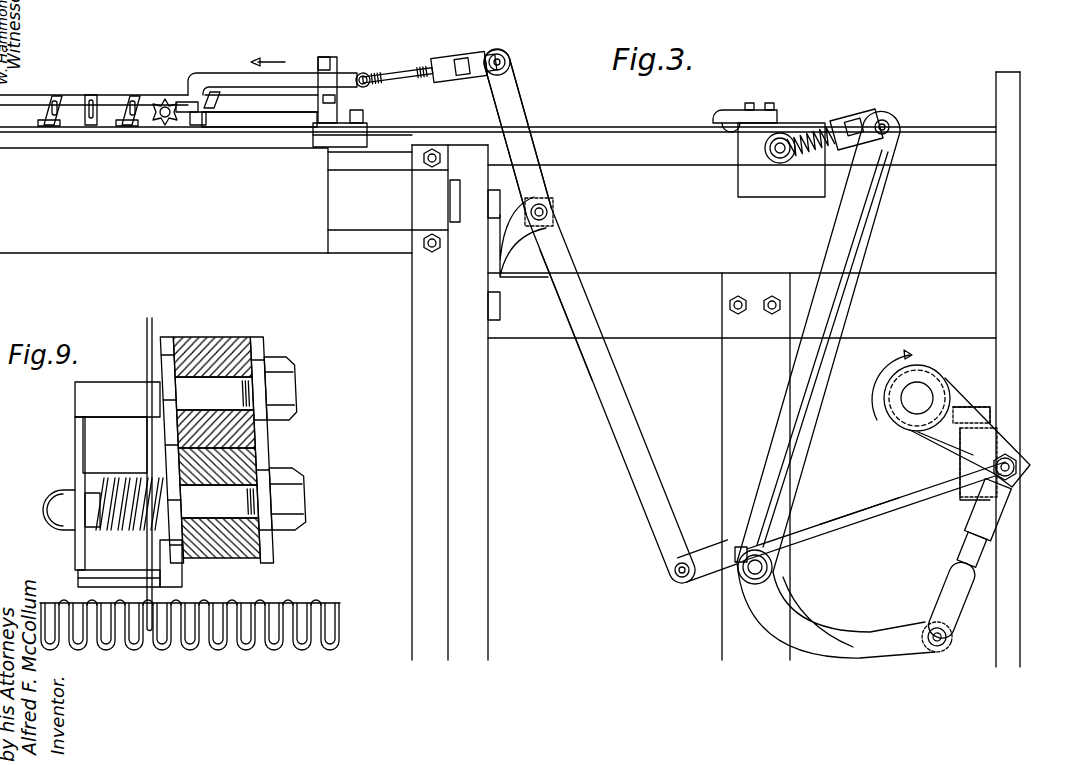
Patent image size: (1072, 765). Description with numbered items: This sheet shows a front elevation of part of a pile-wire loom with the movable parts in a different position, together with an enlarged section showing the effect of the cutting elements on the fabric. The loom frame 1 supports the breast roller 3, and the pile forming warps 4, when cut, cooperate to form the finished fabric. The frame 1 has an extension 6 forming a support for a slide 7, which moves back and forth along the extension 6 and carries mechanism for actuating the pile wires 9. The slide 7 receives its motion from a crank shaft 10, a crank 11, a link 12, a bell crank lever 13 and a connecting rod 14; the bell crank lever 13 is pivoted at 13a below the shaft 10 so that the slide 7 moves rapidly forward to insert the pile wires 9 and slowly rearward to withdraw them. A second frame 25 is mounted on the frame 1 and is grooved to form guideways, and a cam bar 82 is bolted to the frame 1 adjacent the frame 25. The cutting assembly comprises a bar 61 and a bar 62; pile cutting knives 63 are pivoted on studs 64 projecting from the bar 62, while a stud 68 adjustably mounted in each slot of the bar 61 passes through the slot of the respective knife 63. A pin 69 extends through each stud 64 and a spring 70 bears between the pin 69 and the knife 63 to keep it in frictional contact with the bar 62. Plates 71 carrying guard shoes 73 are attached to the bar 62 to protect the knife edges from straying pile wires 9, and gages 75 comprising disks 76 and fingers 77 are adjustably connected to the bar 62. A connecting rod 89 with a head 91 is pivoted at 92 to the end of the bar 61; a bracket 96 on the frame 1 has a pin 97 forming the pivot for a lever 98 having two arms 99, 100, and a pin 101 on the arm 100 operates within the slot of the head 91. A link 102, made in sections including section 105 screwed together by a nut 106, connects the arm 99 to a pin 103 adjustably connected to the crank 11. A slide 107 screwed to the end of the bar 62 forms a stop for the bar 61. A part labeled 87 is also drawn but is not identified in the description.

In FIG. 3, the loom frame 1 is at (412, 290).
In FIG. 3, the breast roller 3 is at (224, 200).
In FIG. 3, the pile forming warps 4 is at (382, 147).
In FIG. 3, the extension 6 is at (722, 160).
In FIG. 3, the slide 7 is at (737, 114).
In FIG. 3, the pile wires 9 is at (468, 127).
In FIG. 9, the pile wires 9 is at (196, 650).
In FIG. 3, the crank shaft 10 is at (911, 390).
In FIG. 3, the crank 11 is at (960, 404).
In FIG. 3, the link 12 is at (985, 548).
In FIG. 3, the bell crank lever 13 is at (866, 240).
In FIG. 3, the pivot 13a is at (780, 566).
In FIG. 3, the connecting rod 14 is at (846, 120).
In FIG. 3, the second frame 25 is at (337, 70).
In FIG. 3, the bar 61 is at (237, 73).
In FIG. 9, the bar 61 is at (225, 337).
In FIG. 3, the bar 62 is at (275, 92).
In FIG. 9, the bar 62 is at (240, 460).
In FIG. 3, the pile cutting knives 63 is at (52, 97).
In FIG. 9, the pile cutting knives 63 is at (152, 442).
In FIG. 9, the studs 64 is at (242, 499).
In FIG. 9, the stud 68 is at (235, 388).
In FIG. 9, the pin 69 is at (112, 538).
In FIG. 9, the spring 70 is at (139, 536).
In FIG. 3, the plates 71 is at (91, 95).
In FIG. 9, the plates 71 is at (62, 534).
In FIG. 9, the guard shoes 73 is at (78, 579).
In FIG. 3, the gages 75 is at (165, 99).
In FIG. 9, the gages 75 is at (80, 458).
In FIG. 9, the rollers or disks 76 is at (160, 600).
In FIG. 9, the fingers 77 is at (110, 652).
In FIG. 3, the cam bar 82 is at (252, 118).
In FIG. 3, the bracket 87 is at (184, 116).
In FIG. 3, the connecting rod 89 is at (412, 83).
In FIG. 3, the head 91 is at (452, 68).
In FIG. 3, the pivot 92 is at (366, 86).
In FIG. 3, the bracket 96 is at (516, 240).
In FIG. 3, the bolt or pin 97 is at (552, 210).
In FIG. 3, the lever 98 is at (584, 300).
In FIG. 3, the arm 99 is at (608, 380).
In FIG. 3, the arm 100 is at (512, 90).
In FIG. 3, the projection or pin 101 is at (510, 62).
In FIG. 3, the link 102 is at (708, 578).
In FIG. 3, the pin 103 is at (1014, 466).
In FIG. 3, the section 105 is at (910, 504).
In FIG. 3, the nut 106 is at (724, 552).
In FIG. 3, the slide 107 is at (858, 514).